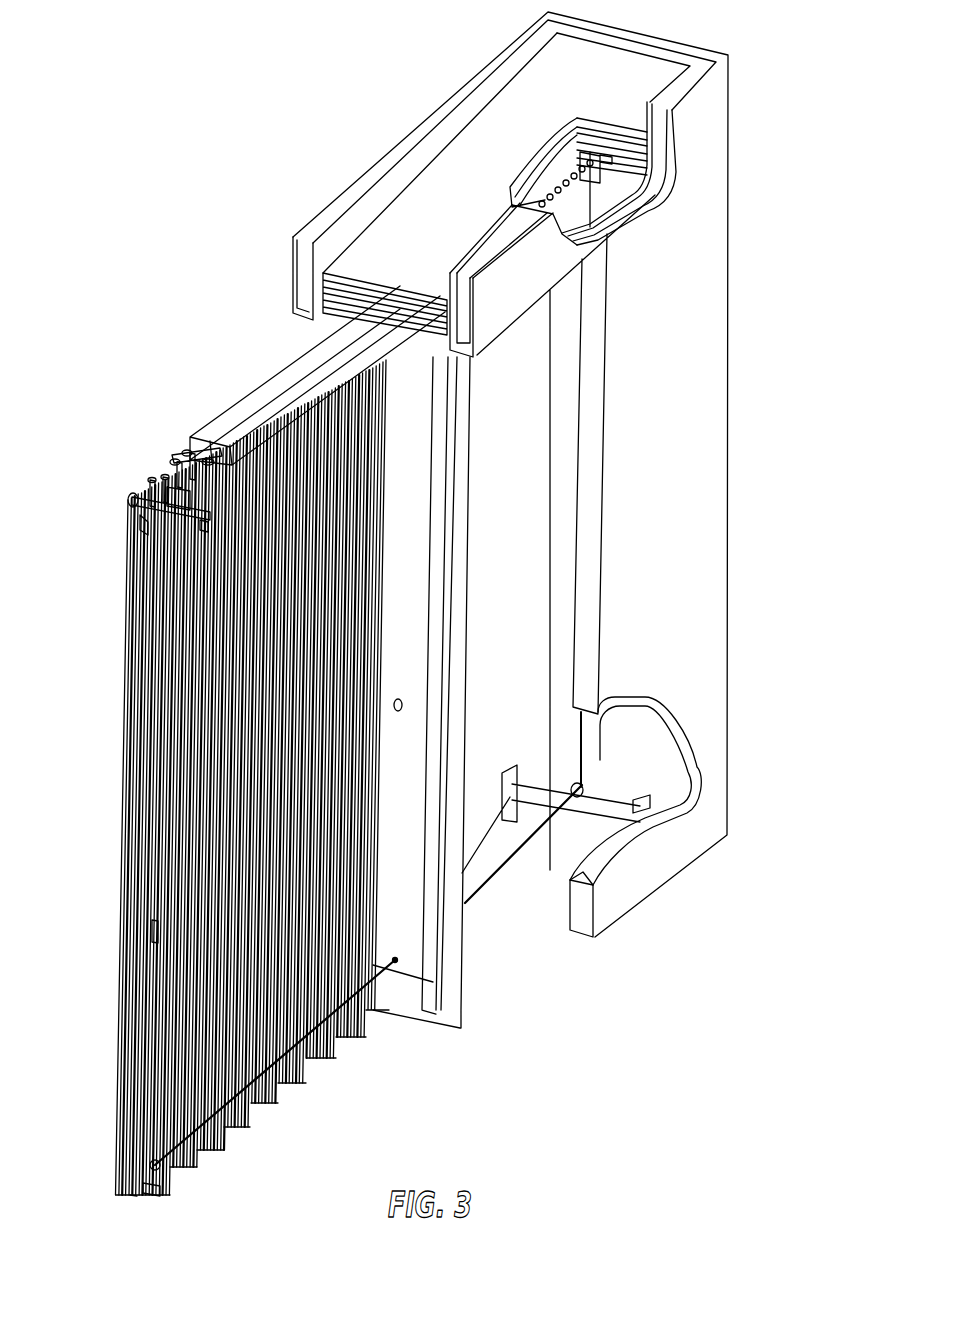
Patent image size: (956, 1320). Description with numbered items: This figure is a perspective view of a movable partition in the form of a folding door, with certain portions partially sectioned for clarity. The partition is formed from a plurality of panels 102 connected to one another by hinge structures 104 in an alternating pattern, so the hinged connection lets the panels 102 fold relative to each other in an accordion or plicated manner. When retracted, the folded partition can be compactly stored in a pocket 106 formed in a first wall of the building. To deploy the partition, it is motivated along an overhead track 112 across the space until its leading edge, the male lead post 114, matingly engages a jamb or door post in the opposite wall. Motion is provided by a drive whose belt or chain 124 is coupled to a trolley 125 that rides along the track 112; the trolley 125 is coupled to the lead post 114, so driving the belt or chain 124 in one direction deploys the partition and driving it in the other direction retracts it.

The panels 102 is at (307, 1060).
The hinge structures 104 is at (323, 1050).
The pocket 106 is at (541, 890).
The overhead track 112 is at (242, 390).
The male lead post 114 is at (143, 1186).
The belt or chain 124 is at (540, 208).
The trolley 125 is at (130, 520).